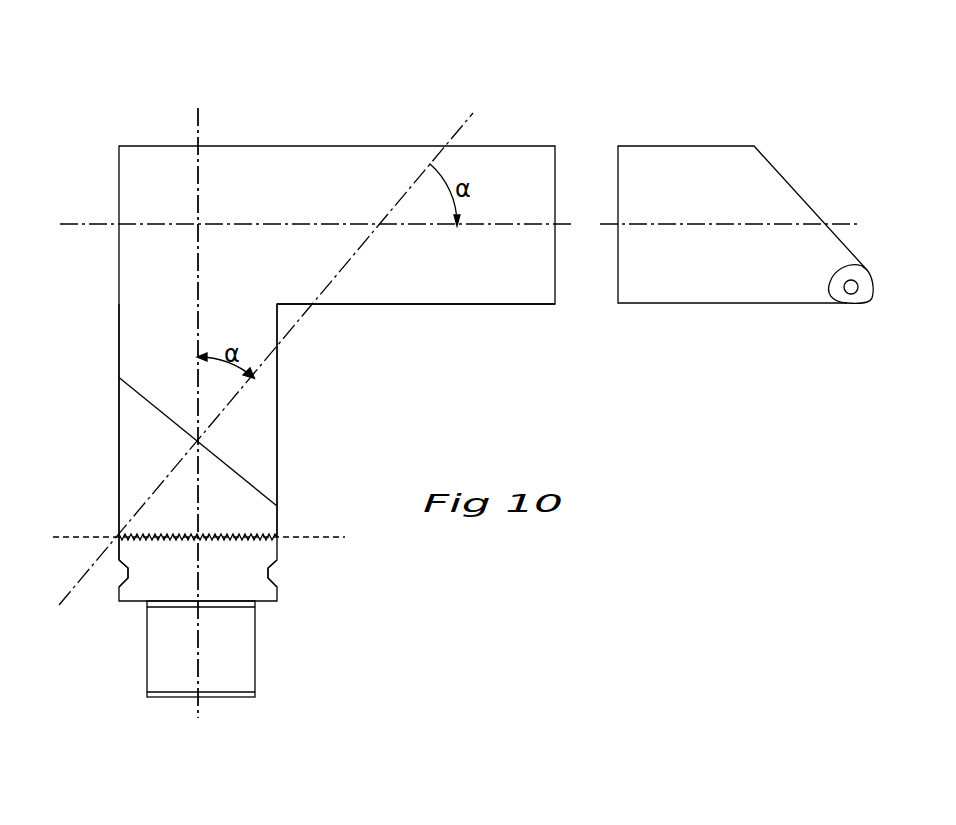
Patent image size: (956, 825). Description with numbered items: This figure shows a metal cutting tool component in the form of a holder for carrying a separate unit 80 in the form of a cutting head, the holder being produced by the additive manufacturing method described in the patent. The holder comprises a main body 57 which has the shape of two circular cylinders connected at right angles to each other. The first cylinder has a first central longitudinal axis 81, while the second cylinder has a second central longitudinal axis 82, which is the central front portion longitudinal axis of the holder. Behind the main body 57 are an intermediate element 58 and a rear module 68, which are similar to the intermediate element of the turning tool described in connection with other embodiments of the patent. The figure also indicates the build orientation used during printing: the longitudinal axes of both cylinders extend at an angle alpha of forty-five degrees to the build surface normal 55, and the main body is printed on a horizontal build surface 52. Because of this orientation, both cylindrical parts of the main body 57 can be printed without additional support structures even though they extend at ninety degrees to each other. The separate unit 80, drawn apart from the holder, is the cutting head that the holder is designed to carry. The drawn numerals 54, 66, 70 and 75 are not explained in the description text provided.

The horizontal build surface 52 is at (142, 398).
The longitudinal axis 54 is at (221, 373).
The build surface normal 55 is at (458, 123).
The main body 57 is at (377, 283).
The intermediate element 58 is at (146, 468).
The shank 66 is at (240, 642).
The rear module 68 is at (128, 592).
The cutting tool body 70 is at (150, 165).
The thread line 75 is at (333, 528).
The separate unit 80 is at (730, 293).
The first central longitudinal axis 81 is at (199, 132).
The second central longitudinal axis 82 is at (61, 225).